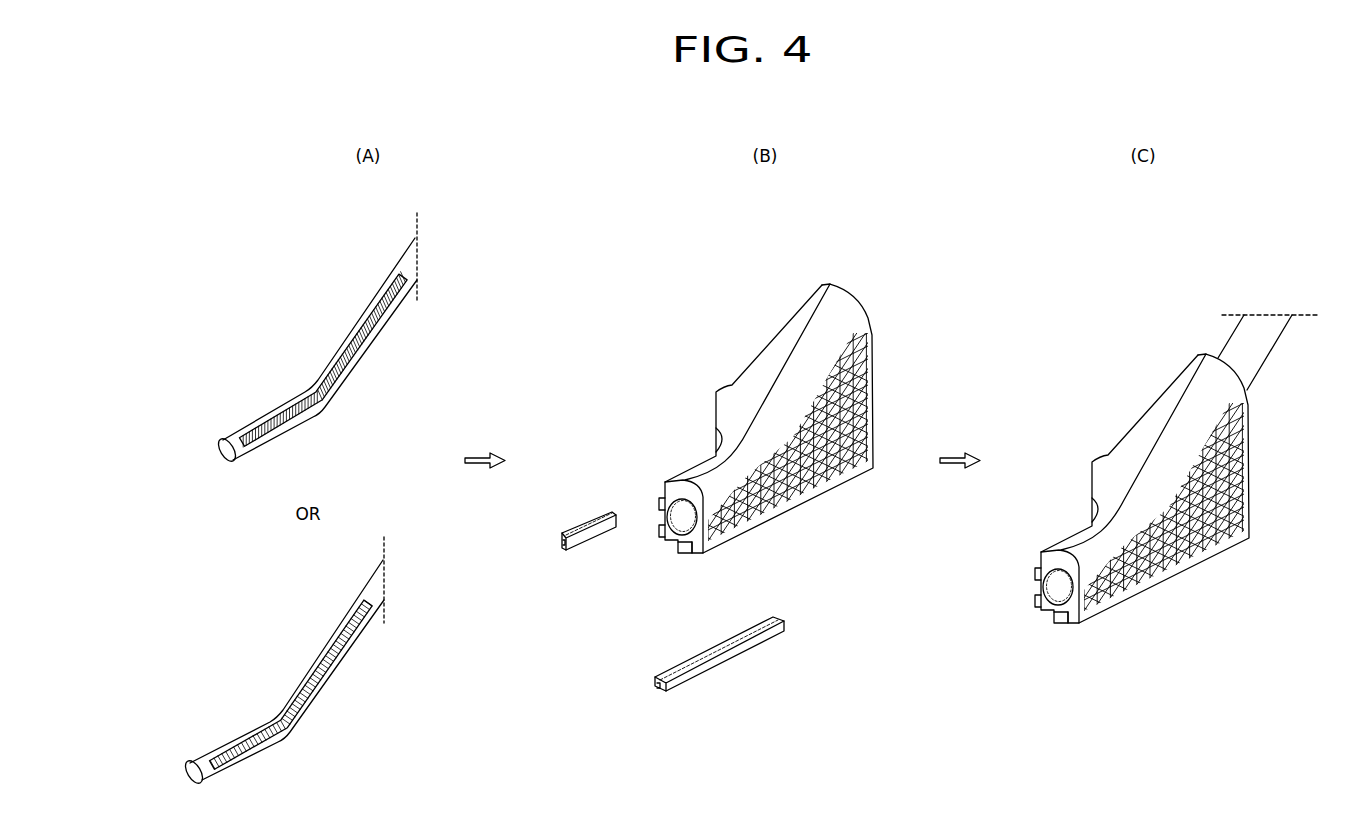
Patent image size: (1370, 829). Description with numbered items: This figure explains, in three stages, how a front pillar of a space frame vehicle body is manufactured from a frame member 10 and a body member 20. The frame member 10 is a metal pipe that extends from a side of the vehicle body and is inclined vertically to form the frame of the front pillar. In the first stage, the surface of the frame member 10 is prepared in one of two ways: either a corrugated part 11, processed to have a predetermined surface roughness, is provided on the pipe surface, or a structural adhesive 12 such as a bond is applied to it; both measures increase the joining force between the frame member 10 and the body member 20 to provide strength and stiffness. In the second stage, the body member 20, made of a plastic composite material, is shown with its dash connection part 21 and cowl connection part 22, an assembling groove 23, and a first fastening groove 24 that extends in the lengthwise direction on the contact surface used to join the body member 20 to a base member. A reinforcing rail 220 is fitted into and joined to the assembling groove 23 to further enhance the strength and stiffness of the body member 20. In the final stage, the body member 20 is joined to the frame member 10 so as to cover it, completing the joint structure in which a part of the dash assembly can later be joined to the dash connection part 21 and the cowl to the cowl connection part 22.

The frame member 10 is at (407, 266).
The corrugated part 11 is at (357, 360).
The structural adhesive 12 is at (320, 690).
The body member 20 is at (840, 477).
The dash connection part 21 is at (1068, 548).
The cowl connection part 22 is at (1145, 430).
The assembling groove 23 is at (662, 520).
The first fastening groove 24 is at (665, 495).
The reinforcing rail 220 is at (588, 518).